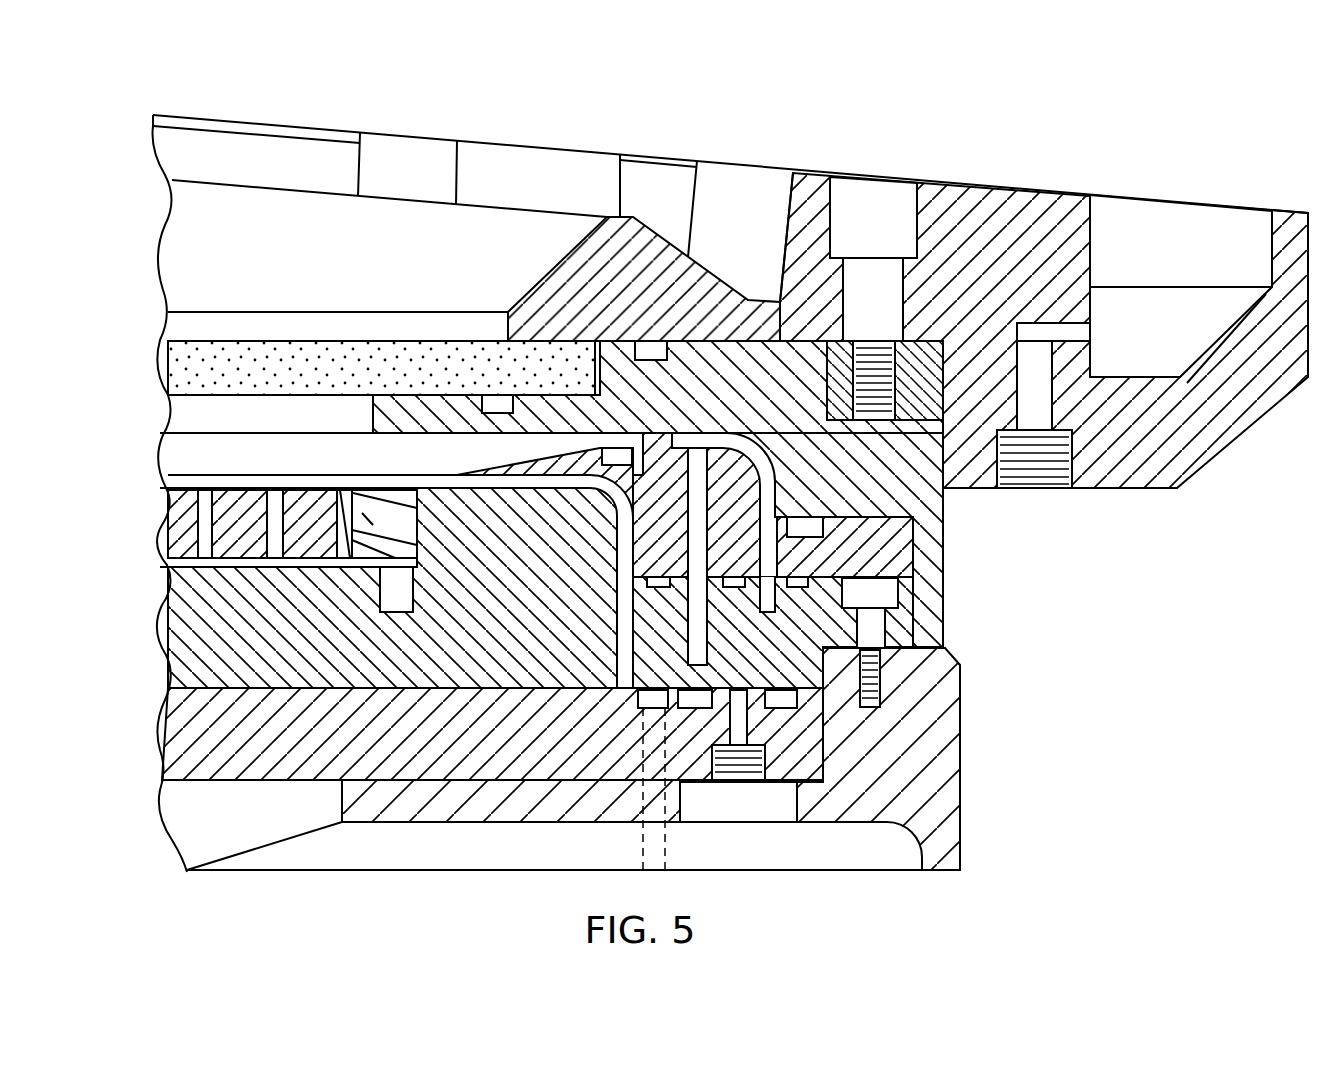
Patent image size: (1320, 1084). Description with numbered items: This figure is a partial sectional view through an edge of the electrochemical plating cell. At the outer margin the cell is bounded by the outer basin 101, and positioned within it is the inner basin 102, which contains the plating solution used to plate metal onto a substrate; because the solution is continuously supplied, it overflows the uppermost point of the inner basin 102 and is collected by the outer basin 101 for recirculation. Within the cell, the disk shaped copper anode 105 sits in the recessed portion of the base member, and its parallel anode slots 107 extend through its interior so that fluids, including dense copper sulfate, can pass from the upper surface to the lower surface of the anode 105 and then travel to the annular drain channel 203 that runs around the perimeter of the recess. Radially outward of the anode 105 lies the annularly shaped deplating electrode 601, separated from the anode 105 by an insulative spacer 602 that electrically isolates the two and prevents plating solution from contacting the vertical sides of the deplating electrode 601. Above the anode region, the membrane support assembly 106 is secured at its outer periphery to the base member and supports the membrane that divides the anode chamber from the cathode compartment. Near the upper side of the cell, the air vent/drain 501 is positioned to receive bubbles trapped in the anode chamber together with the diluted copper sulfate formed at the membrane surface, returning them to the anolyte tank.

The outer basin 101 is at (1288, 223).
The inner basin 102 is at (607, 217).
The anode 105 is at (178, 545).
The membrane support assembly 106 is at (195, 370).
The anode slots 107 is at (275, 528).
The annular drain channel 203 is at (388, 603).
The air vent/drain 501 is at (770, 550).
The deplating electrode 601 is at (150, 492).
The insulative spacer 602 is at (128, 490).